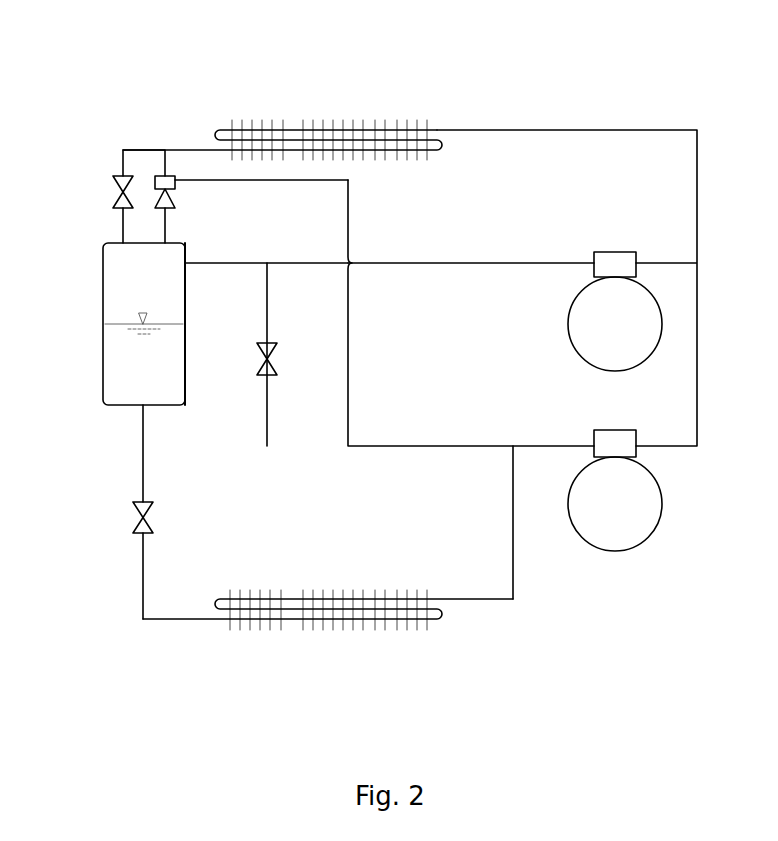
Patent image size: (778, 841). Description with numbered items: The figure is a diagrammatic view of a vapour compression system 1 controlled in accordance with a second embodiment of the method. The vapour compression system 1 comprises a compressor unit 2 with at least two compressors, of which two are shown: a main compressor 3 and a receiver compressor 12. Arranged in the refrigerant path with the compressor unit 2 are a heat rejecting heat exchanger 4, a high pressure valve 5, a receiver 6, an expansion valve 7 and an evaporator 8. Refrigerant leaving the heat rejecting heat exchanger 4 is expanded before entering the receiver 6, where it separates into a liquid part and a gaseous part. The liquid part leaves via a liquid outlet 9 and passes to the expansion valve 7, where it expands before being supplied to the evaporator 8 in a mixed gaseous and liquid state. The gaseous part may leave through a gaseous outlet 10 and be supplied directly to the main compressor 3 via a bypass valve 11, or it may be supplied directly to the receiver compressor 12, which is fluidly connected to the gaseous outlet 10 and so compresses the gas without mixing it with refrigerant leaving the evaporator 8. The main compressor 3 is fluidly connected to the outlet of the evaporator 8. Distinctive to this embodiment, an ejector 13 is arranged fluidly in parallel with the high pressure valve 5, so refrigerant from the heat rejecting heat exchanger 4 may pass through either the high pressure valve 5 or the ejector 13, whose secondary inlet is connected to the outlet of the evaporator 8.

The vapour compression system 1 is at (642, 58).
The compressor unit 2 is at (672, 332).
The main compressor 3 is at (638, 522).
The heat rejecting heat exchanger 4 is at (328, 135).
The high pressure valve 5 is at (117, 180).
The receiver 6 is at (123, 287).
The expansion valve 7 is at (137, 530).
The evaporator 8 is at (328, 617).
The liquid outlet 9 is at (138, 407).
The gaseous outlet 10 is at (187, 265).
The bypass valve 11 is at (268, 375).
The receiver compressor 12 is at (608, 335).
The ejector 13 is at (168, 183).